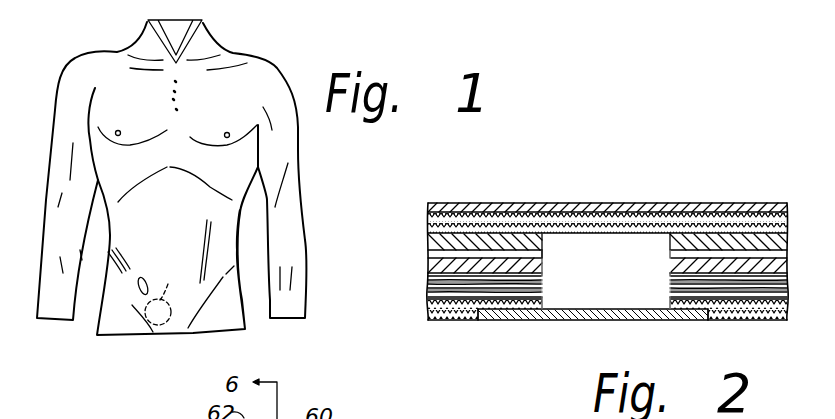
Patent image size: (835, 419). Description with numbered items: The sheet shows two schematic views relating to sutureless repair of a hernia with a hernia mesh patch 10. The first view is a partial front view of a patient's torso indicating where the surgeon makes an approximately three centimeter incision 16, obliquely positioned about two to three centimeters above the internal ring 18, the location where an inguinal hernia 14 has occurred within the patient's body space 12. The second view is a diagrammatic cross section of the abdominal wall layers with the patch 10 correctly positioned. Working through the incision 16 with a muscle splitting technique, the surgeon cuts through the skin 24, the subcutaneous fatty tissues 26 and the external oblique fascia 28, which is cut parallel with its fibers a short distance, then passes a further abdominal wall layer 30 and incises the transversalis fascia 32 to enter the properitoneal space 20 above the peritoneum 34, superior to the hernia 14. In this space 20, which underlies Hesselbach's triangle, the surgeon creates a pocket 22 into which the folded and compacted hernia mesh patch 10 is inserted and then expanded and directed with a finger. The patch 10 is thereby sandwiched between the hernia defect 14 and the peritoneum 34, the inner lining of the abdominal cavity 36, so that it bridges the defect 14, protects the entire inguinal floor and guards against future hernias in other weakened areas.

In FIG. 2, the hernia mesh patch 10 is at (673, 322).
In FIG. 2, the patient's body space 12 is at (578, 300).
In FIG. 1, the hernia 14 is at (165, 318).
In FIG. 2, the hernia 14 is at (544, 252).
In FIG. 1, the incision 16 is at (150, 284).
In FIG. 1, the internal ring 18 is at (178, 284).
In FIG. 2, the properitoneal space 20 is at (463, 307).
In FIG. 2, the pocket 22 is at (630, 321).
In FIG. 2, the skin 24 is at (694, 204).
In FIG. 2, the subcutaneous fatty tissues 26 is at (752, 225).
In FIG. 2, the external oblique fascia 28 is at (435, 242).
In FIG. 2, the barrier layer 30 is at (430, 265).
In FIG. 2, the transversalis fascia 32 is at (430, 287).
In FIG. 2, the peritoneum 34 is at (430, 315).
In FIG. 2, the abdominal cavity 36 is at (774, 356).